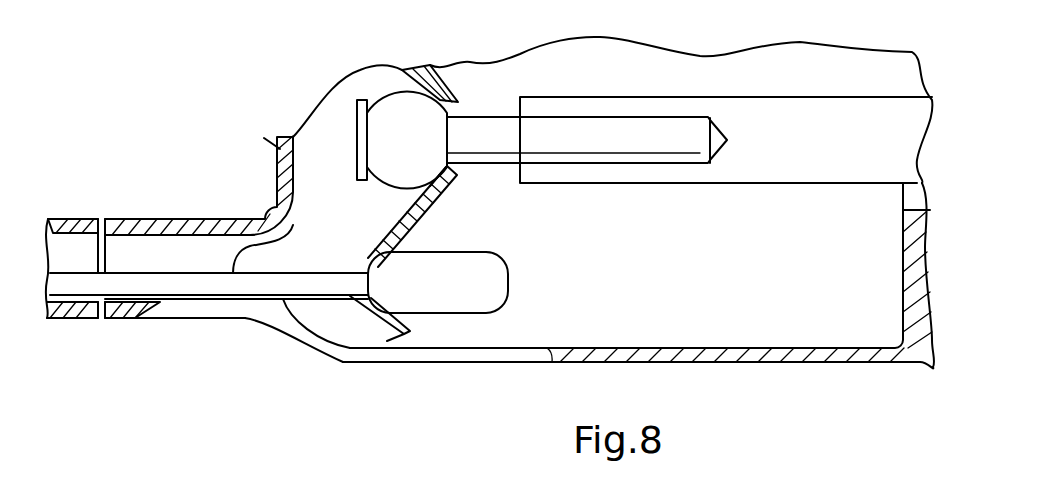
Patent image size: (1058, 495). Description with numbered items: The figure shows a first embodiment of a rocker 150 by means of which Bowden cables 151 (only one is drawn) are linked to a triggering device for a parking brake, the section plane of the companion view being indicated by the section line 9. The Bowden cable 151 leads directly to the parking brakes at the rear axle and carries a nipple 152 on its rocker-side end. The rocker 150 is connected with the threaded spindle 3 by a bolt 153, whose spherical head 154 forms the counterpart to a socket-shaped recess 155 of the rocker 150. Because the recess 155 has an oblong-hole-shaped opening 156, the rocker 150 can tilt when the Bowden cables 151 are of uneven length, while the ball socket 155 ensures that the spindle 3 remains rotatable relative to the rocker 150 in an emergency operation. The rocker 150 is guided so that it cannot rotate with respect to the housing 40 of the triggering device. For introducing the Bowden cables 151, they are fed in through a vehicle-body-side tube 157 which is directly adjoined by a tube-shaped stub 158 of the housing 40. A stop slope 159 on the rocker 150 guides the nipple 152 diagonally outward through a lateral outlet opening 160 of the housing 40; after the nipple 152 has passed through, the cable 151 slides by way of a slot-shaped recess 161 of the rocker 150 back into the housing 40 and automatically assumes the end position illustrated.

The threaded spindle 3 is at (805, 113).
The section line 9- 9 is at (397, 62).
The housing 40 is at (812, 355).
The rocker 150 is at (440, 83).
The Bowden cable 151 is at (97, 287).
The nipple 152 is at (492, 293).
The bolt 153 is at (648, 128).
The spherical head 154 is at (380, 113).
The socket-shaped recess 155 is at (462, 218).
The oblong-hole-shaped opening 156 is at (466, 175).
The vehicle-body-side tube 157 is at (67, 221).
The tube-shaped stub 158 is at (182, 220).
The stop slope 159 is at (309, 318).
The lateral outlet opening 160 is at (476, 376).
The slot-shaped recess 161 is at (383, 325).